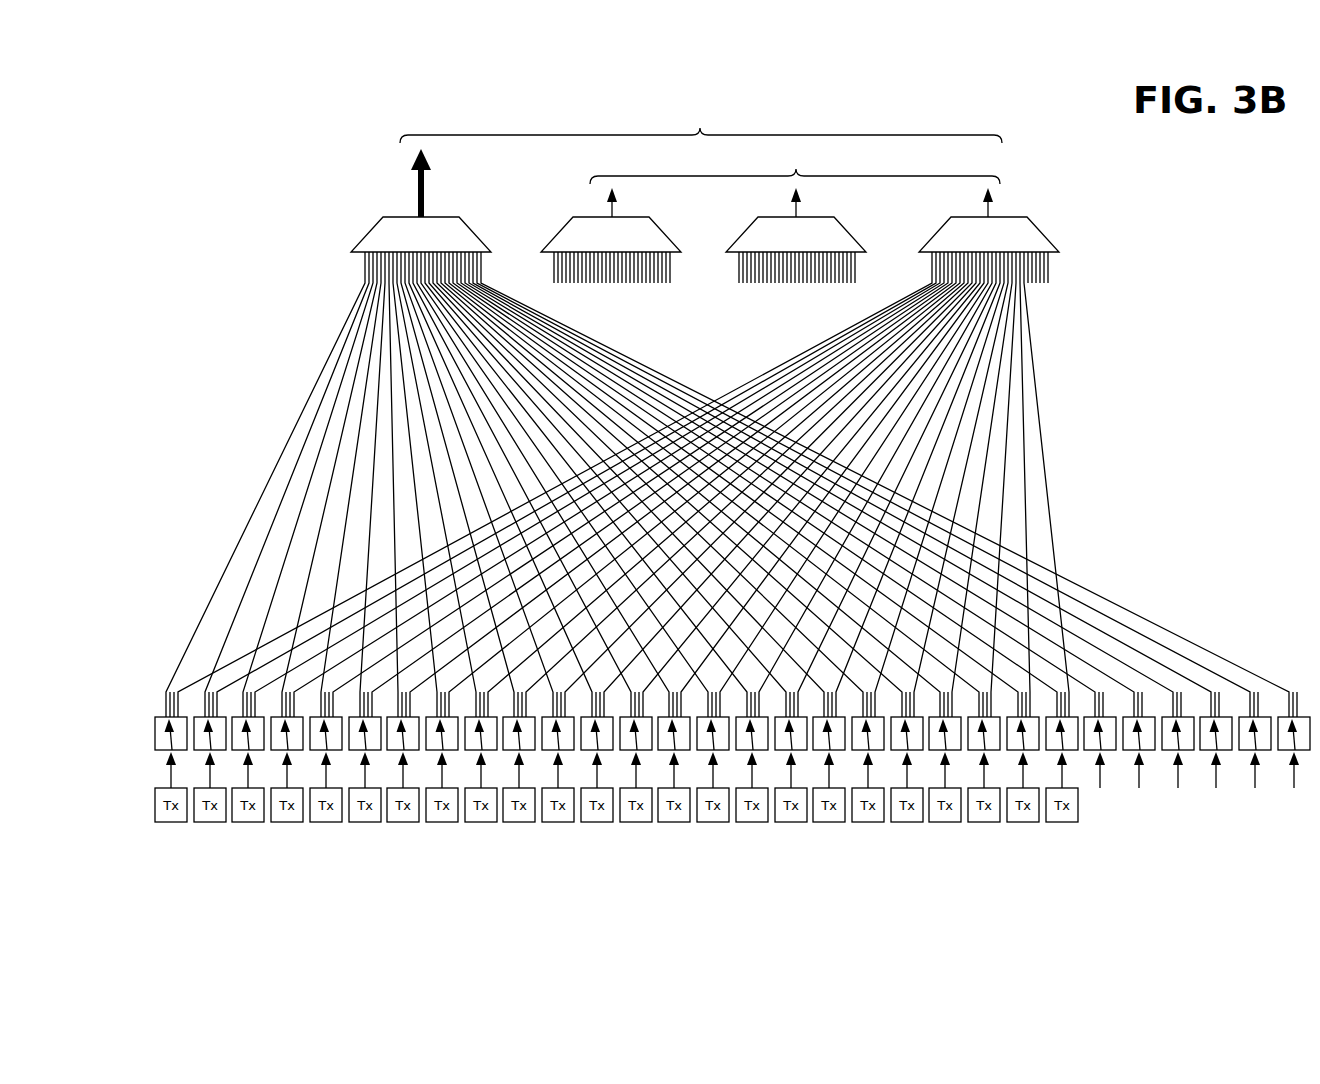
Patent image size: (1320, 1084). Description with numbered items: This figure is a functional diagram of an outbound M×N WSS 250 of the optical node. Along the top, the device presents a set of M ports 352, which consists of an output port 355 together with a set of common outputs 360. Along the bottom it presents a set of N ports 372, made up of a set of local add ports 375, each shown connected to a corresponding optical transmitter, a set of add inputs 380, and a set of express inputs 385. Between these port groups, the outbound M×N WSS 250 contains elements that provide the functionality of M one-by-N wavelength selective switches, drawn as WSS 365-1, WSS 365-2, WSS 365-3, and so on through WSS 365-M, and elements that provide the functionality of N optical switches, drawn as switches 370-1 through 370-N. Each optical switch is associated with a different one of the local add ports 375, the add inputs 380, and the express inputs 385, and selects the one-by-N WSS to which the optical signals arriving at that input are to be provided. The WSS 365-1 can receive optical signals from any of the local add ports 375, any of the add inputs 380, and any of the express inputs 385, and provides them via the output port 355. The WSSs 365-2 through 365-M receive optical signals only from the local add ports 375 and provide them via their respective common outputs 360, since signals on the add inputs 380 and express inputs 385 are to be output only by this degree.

The outbound M×N WSS 250 is at (296, 95).
The set of M ports 352 is at (701, 121).
The output port 355 is at (344, 183).
The set of common outputs 360 is at (795, 163).
The 1×N WSS 365-1 is at (421, 234).
The 1×N WSS 365-2 is at (611, 235).
The 1×N WSS 365-3 is at (796, 235).
The 1×N WSS 365-M is at (989, 220).
The optical switch 370-1 is at (193, 715).
The optical switch 370-N is at (1294, 752).
The set of N ports 372 is at (1312, 879).
The set of local add ports 375 is at (157, 832).
The set of add inputs 380 is at (1192, 832).
The set of express inputs 385 is at (1312, 832).